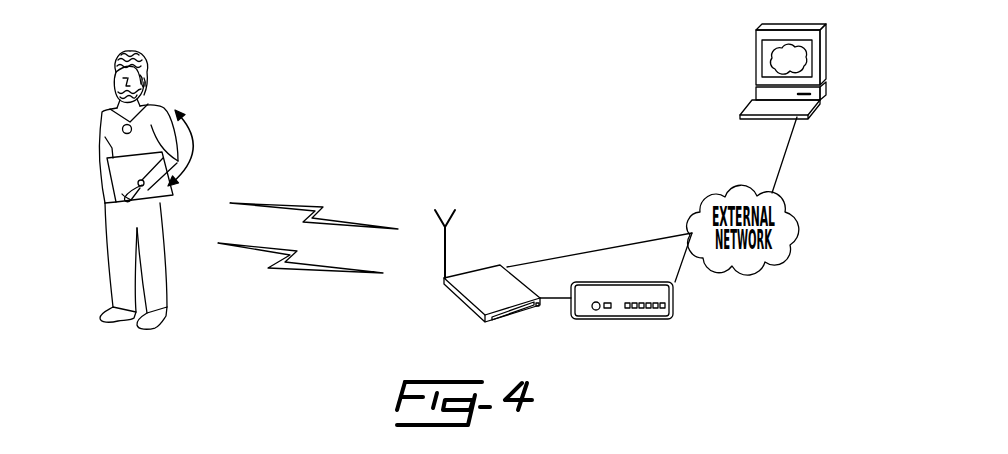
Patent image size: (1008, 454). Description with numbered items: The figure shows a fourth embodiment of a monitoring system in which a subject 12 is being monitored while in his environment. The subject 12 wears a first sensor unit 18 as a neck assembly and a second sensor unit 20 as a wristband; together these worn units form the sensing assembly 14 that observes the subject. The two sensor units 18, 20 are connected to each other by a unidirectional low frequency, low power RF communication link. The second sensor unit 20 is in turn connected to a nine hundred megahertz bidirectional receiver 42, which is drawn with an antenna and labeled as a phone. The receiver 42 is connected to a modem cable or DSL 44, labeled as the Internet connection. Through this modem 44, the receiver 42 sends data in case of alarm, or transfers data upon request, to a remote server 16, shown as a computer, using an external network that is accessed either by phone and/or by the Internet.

The subject 12 is at (127, 328).
The sensing assembly 14 is at (196, 138).
The remote server 16 is at (823, 52).
The first sensor unit 18 is at (105, 113).
The second sensor unit 20 is at (160, 198).
The bidirectional receiver 42 is at (506, 298).
The modem cable or DSL 44 is at (635, 320).